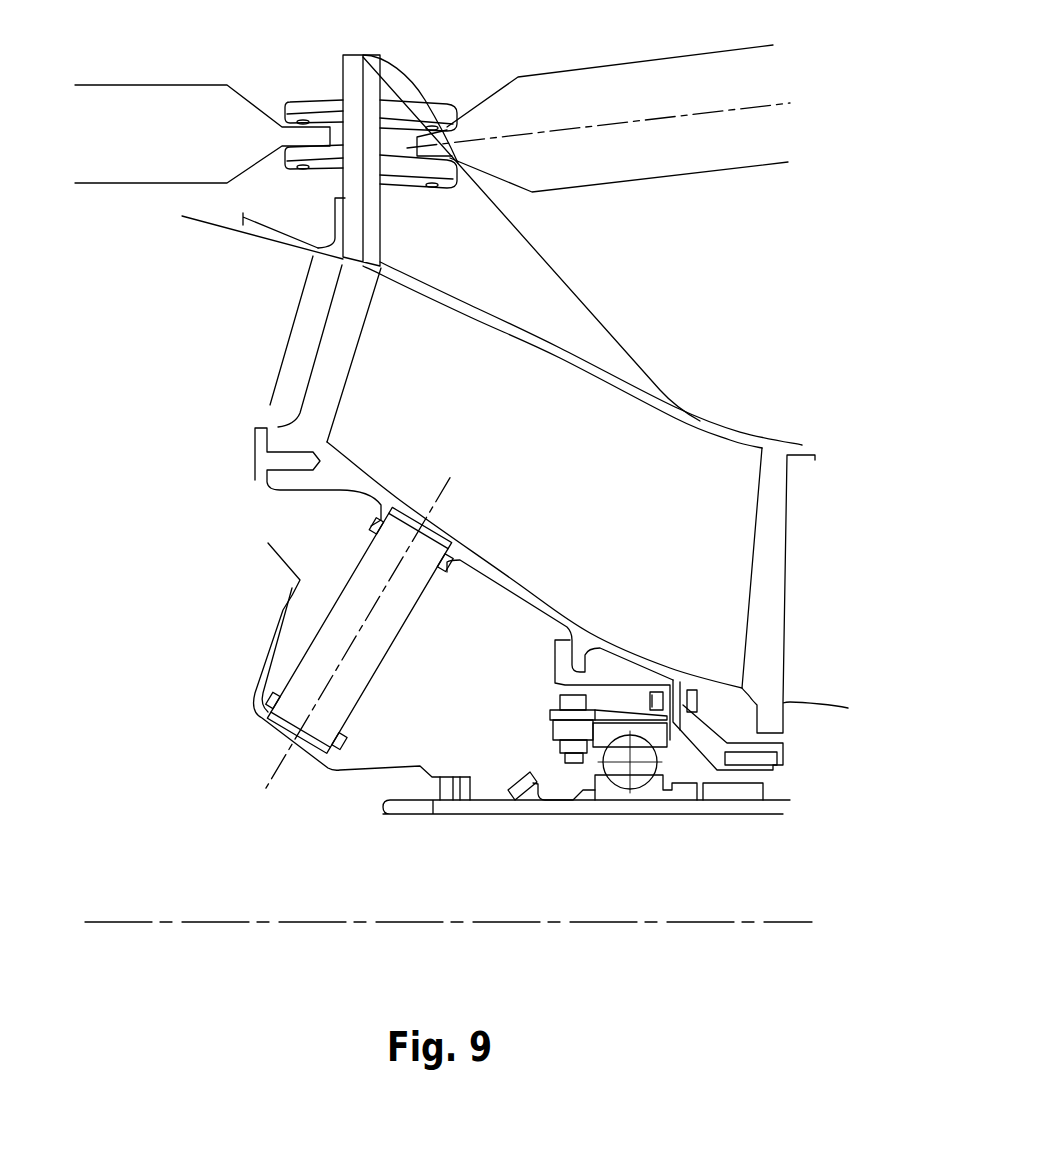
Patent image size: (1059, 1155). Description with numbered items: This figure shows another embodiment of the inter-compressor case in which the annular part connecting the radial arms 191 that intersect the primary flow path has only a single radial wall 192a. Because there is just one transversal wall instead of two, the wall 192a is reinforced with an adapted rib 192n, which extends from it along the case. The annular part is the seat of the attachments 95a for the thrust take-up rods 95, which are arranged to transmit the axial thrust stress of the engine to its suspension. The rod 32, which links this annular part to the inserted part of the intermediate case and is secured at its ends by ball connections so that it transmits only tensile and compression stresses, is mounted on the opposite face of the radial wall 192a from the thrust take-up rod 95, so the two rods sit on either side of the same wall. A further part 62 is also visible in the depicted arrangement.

The rod 32 is at (127, 135).
The thrust take-up rod 95 is at (683, 98).
The attachment for the thrust take-up rod 95a is at (398, 112).
The radial arm 191 is at (450, 447).
The radial wall 192a is at (355, 185).
The rib 192n is at (503, 263).
The pivot 62 is at (620, 770).